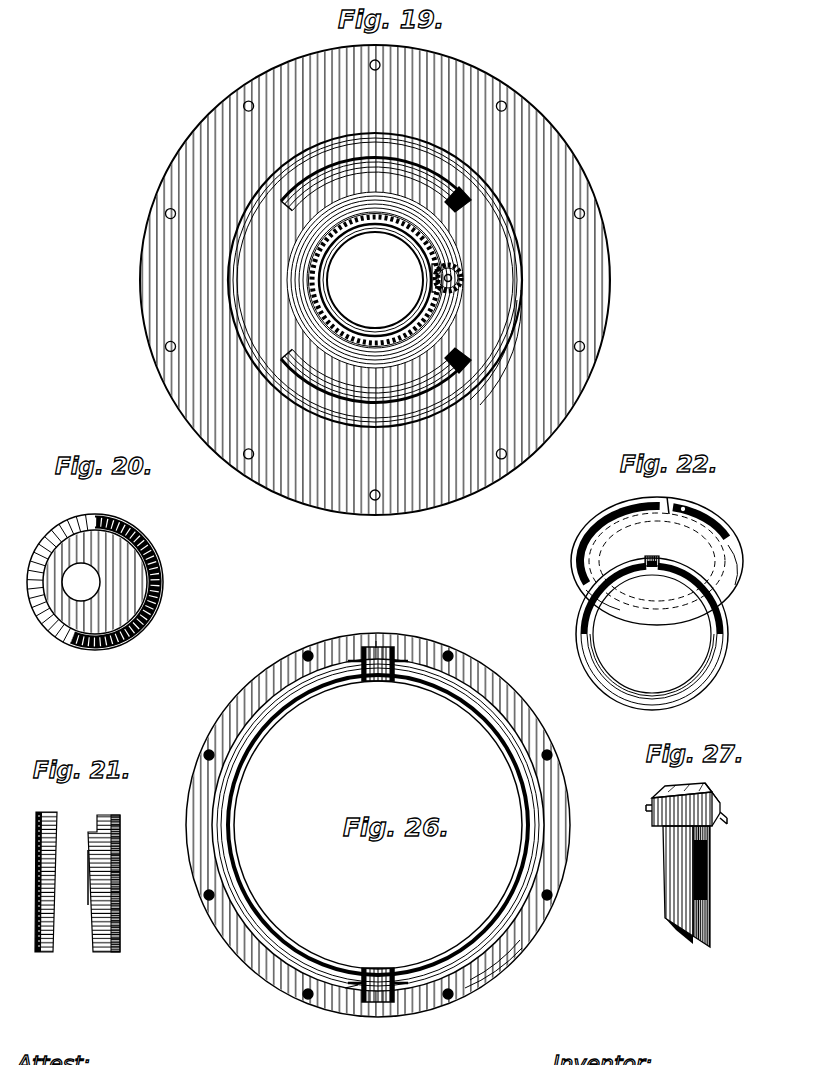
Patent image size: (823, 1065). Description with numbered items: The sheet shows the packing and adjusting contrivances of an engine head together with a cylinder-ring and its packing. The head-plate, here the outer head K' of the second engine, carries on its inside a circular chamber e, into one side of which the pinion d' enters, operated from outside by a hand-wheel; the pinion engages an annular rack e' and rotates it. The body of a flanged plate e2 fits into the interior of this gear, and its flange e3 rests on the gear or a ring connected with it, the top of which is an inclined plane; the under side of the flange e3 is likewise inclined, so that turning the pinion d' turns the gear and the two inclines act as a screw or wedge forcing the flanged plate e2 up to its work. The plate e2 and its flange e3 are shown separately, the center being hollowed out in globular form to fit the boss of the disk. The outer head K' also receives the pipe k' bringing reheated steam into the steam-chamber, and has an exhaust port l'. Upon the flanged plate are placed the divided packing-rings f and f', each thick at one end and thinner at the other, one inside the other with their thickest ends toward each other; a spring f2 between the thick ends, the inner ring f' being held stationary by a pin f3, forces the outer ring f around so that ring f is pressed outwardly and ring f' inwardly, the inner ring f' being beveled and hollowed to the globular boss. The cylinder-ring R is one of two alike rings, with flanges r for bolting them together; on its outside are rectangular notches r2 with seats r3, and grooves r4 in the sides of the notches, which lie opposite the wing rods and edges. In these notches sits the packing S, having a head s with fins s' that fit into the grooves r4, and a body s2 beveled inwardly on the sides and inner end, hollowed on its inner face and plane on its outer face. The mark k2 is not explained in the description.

In FIG. 19, the outer head K' is at (375, 280).
In FIG. 19, the circular chamber e is at (375, 280).
In FIG. 19, the annular rack e' is at (375, 280).
In FIG. 21, the annular rack e' is at (46, 881).
In FIG. 20, the flanged plate e2 is at (95, 582).
In FIG. 21, the flanged plate e2 is at (83, 877).
In FIG. 20, the flange e3 is at (114, 569).
In FIG. 21, the flange e3 is at (104, 882).
In FIG. 19, the pipe k' is at (376, 185).
In FIG. 19, the exhaust port l' is at (376, 375).
In FIG. 19, the pinion d' is at (454, 271).
In FIG. 22, the divided packing-ring f is at (657, 559).
In FIG. 22, the inner packing-ring f' is at (652, 634).
In FIG. 22, the spring f2 is at (655, 551).
In FIG. 22, the pin f3 is at (702, 536).
In FIG. 26, the cylinder-ring R is at (378, 825).
In FIG. 26, the flange r is at (378, 826).
In FIG. 26, the rectangular notch r2 is at (347, 985).
In FIG. 26, the seat r3 is at (378, 824).
In FIG. 26, the groove r4 is at (378, 823).
In FIG. 26, the contact k2 is at (383, 640).
In FIG. 27, the packing S is at (678, 821).
In FIG. 27, the head s is at (702, 795).
In FIG. 27, the fin s' is at (684, 816).
In FIG. 27, the body s2 is at (686, 886).